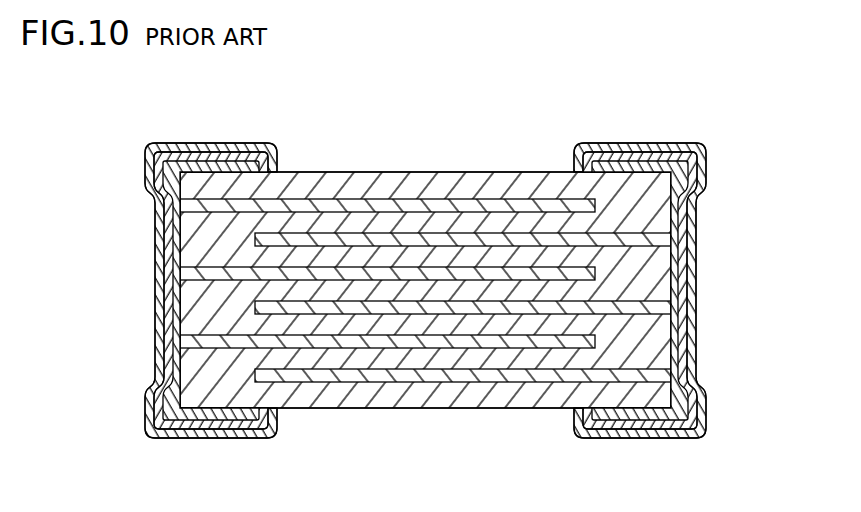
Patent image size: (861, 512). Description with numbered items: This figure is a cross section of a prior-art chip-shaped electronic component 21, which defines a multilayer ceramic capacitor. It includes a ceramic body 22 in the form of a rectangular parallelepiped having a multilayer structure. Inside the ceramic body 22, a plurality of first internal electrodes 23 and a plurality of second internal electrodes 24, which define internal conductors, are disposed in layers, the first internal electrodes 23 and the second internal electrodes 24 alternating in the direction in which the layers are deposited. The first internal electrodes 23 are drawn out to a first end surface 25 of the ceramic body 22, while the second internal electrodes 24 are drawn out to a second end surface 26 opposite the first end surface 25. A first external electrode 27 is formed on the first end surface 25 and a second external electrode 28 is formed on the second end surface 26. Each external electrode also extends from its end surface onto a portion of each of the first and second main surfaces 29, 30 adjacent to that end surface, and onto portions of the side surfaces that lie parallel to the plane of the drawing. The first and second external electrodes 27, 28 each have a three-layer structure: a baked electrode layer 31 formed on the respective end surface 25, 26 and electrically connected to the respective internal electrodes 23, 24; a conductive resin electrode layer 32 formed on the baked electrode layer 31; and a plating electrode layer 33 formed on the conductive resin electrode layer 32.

The chip-shaped electronic component 21 is at (428, 47).
The ceramic body 22 is at (452, 171).
The first internal electrodes 23 is at (408, 272).
The second internal electrodes 24 is at (386, 316).
The first end surface 25 is at (160, 313).
The second end surface 26 is at (706, 200).
The first external electrode 27 is at (92, 172).
The second external electrode 28 is at (768, 338).
The first main surface 29 is at (508, 171).
The second main surface 30 is at (492, 409).
The baked electrode layer 31 is at (172, 177).
The conductive resin electrode layer 32 is at (160, 199).
The plating electrode layer 33 is at (155, 243).